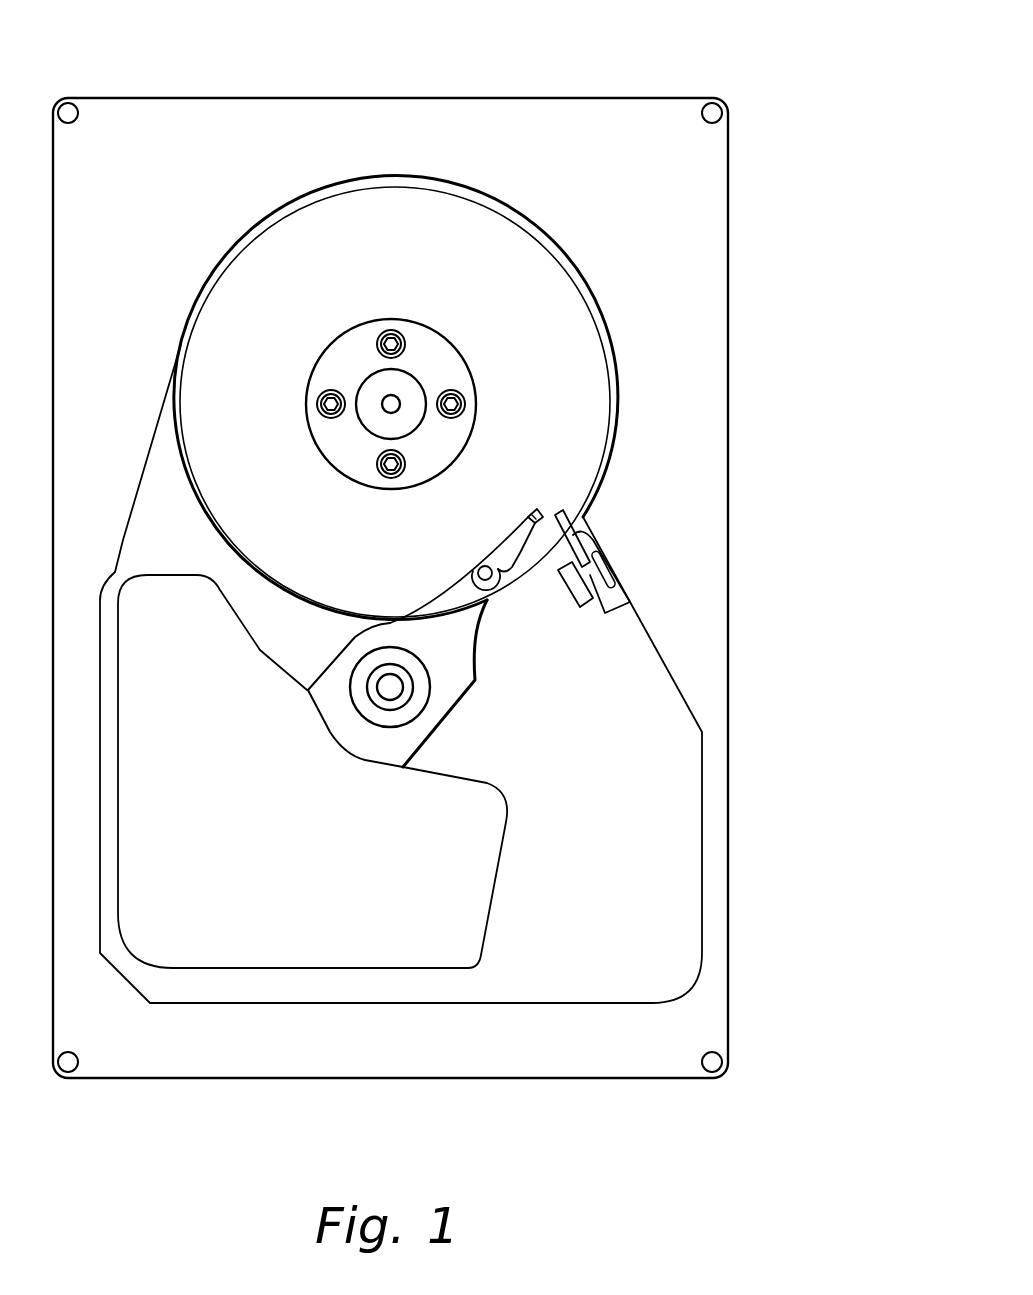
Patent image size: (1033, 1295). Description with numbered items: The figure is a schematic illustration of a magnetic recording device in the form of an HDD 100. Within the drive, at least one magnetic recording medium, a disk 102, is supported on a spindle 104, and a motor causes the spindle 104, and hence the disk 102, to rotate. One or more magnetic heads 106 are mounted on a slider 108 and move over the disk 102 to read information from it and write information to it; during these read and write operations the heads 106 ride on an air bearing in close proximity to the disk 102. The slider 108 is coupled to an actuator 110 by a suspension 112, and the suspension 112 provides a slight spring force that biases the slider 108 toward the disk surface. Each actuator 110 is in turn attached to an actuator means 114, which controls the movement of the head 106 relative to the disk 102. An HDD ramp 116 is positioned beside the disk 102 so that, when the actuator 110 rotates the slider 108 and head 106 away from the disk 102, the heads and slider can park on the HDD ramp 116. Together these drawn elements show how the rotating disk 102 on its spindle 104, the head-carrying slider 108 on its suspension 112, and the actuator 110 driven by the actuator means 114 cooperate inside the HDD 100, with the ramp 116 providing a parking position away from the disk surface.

The HDD 100 is at (633, 43).
The disk 102 is at (293, 251).
The spindle 104 is at (375, 386).
The magnetic head 106 is at (532, 509).
The slider 108 is at (503, 553).
The actuator 110 is at (392, 689).
The suspension 112 is at (452, 630).
The actuator means 114 is at (466, 880).
The HDD ramp 116 is at (614, 612).